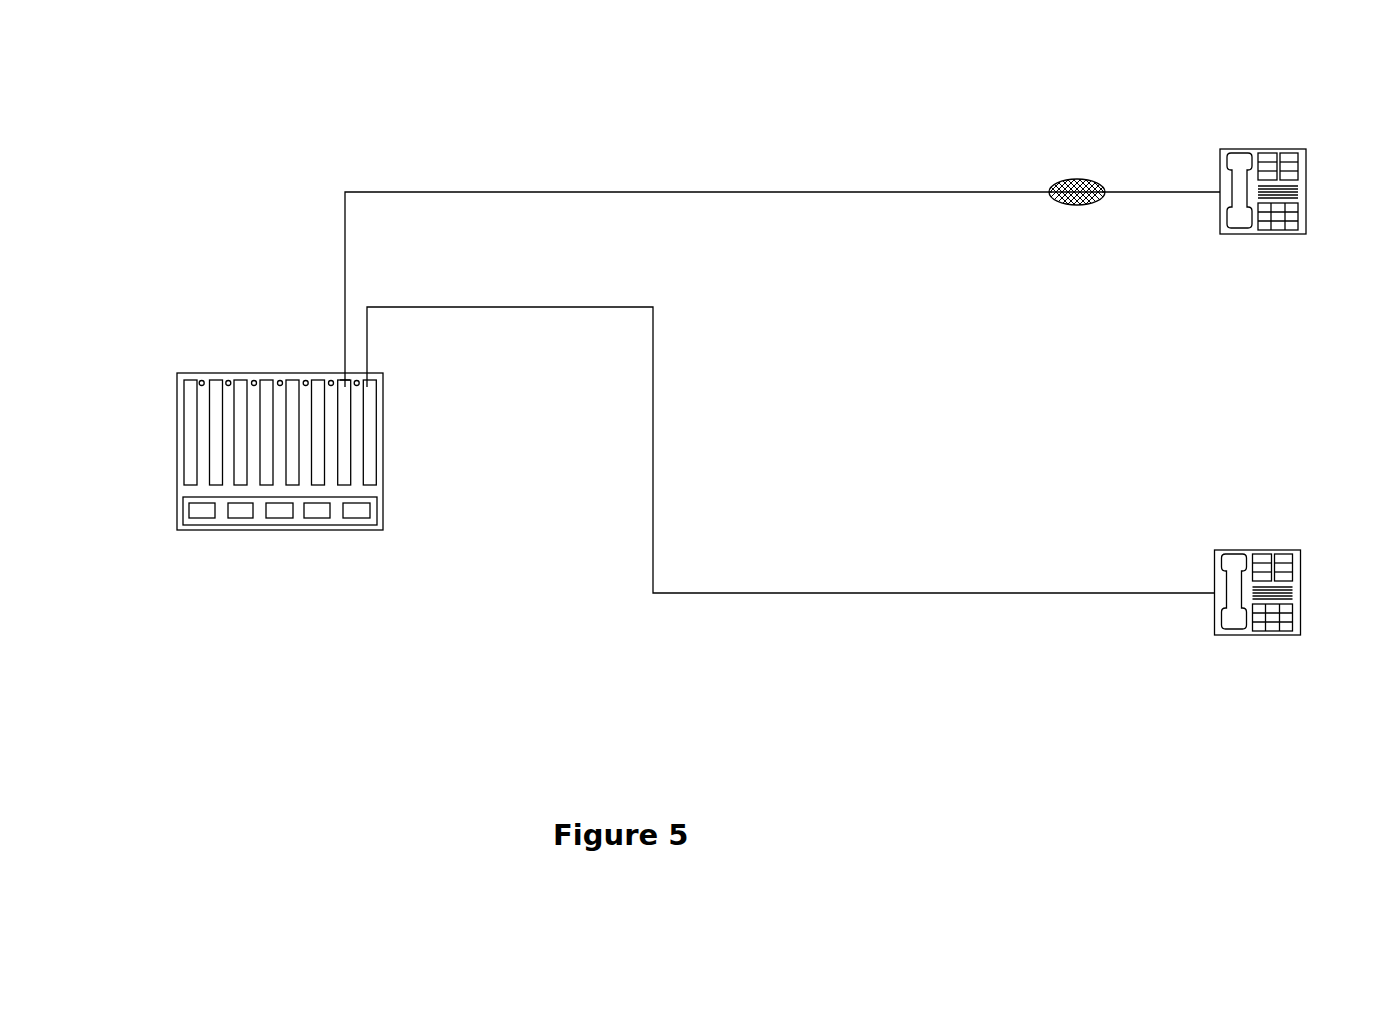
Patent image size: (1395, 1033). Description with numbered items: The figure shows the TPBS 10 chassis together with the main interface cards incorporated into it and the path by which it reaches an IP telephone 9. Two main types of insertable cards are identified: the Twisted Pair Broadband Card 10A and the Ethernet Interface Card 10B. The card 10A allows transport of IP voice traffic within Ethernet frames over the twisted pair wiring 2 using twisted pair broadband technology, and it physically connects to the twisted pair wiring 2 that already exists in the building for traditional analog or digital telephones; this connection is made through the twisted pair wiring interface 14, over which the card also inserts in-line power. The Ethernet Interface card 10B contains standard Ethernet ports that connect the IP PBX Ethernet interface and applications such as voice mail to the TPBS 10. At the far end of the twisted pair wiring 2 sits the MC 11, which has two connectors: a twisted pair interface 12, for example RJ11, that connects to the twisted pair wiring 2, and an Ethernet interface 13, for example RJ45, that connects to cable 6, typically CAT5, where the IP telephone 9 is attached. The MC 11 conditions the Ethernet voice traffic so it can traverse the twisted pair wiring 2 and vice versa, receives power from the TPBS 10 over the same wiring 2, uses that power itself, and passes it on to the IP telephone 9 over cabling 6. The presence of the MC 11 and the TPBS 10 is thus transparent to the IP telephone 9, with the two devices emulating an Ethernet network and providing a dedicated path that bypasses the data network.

The twisted pair wiring 2 is at (782, 257).
The cable 6 is at (791, 359).
The IP telephone 9 is at (1265, 399).
The TPBS 10 is at (305, 477).
The twisted pair broadband card 10A is at (263, 513).
The Ethernet interface card 10B is at (445, 494).
The MC 11 is at (1031, 215).
The twisted pair interface 12 is at (1040, 174).
The Ethernet interface 13 is at (1117, 174).
The twisted pair wiring interface 14 is at (330, 359).